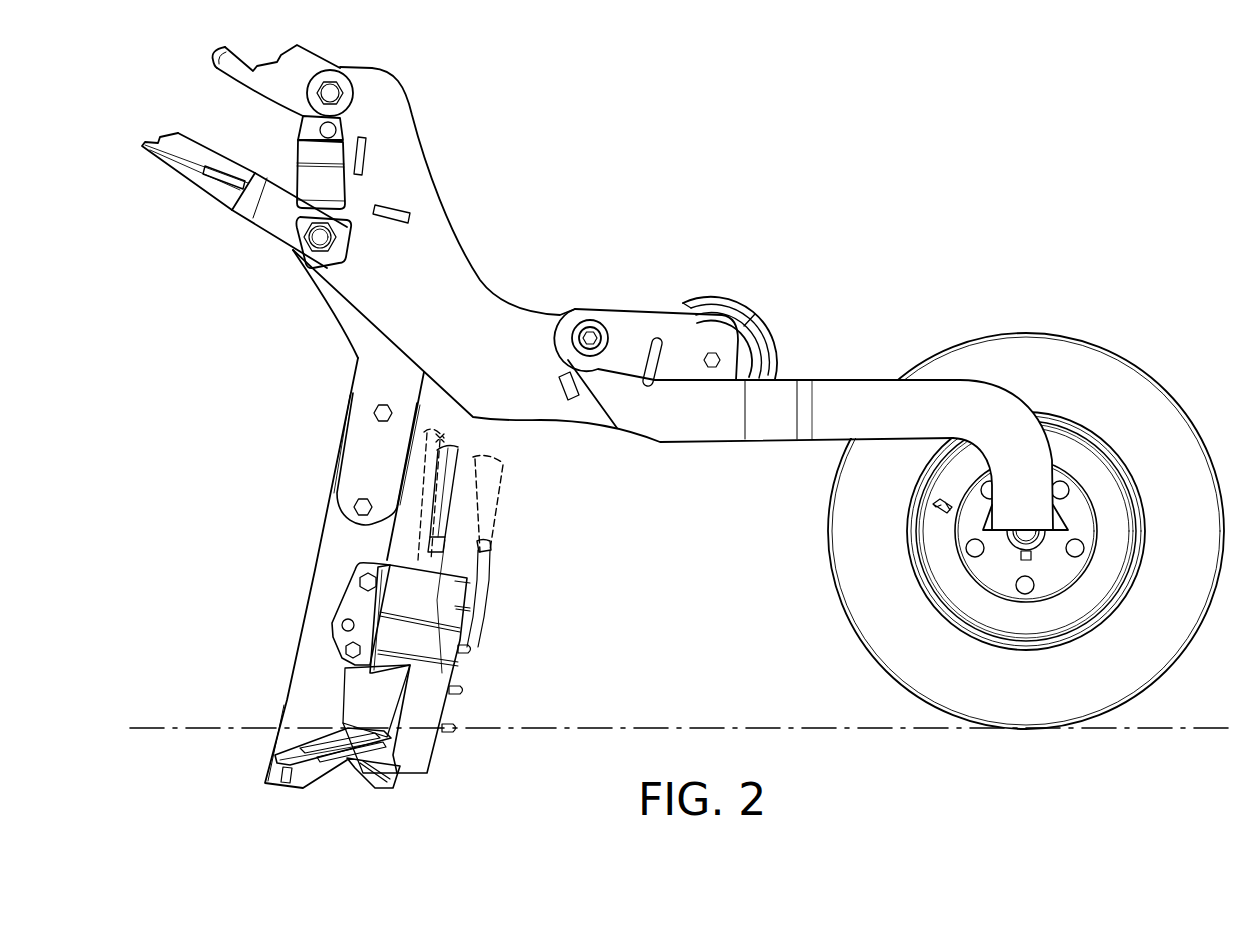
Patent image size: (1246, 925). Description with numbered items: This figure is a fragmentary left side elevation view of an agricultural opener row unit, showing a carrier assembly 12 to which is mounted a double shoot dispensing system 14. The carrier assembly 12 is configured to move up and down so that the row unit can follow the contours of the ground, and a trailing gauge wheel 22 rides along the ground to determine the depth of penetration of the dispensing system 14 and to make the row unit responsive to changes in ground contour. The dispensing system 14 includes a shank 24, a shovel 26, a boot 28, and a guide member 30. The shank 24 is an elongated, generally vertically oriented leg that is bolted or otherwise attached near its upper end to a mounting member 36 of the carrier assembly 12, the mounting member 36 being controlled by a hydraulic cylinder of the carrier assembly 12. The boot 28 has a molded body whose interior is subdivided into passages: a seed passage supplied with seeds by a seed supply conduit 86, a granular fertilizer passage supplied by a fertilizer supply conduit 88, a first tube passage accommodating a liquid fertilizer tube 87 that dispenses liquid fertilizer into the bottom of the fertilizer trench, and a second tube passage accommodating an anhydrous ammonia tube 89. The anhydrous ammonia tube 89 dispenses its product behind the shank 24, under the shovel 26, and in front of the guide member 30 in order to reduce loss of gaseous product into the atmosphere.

The carrier assembly 12 is at (648, 226).
The double shoot dispensing system 14 is at (212, 585).
The trailing gauge wheel 22 is at (1120, 390).
The shank 24 is at (330, 557).
The shovel 26 is at (286, 735).
The boot 28 is at (437, 672).
The guide member 30 is at (390, 778).
The mounting member 36 is at (370, 362).
The seed supply conduit 86 is at (445, 433).
The liquid fertilizer tube 87 is at (458, 447).
The fertilizer supply conduit 88 is at (500, 470).
The anhydrous ammonia tube 89 is at (441, 436).